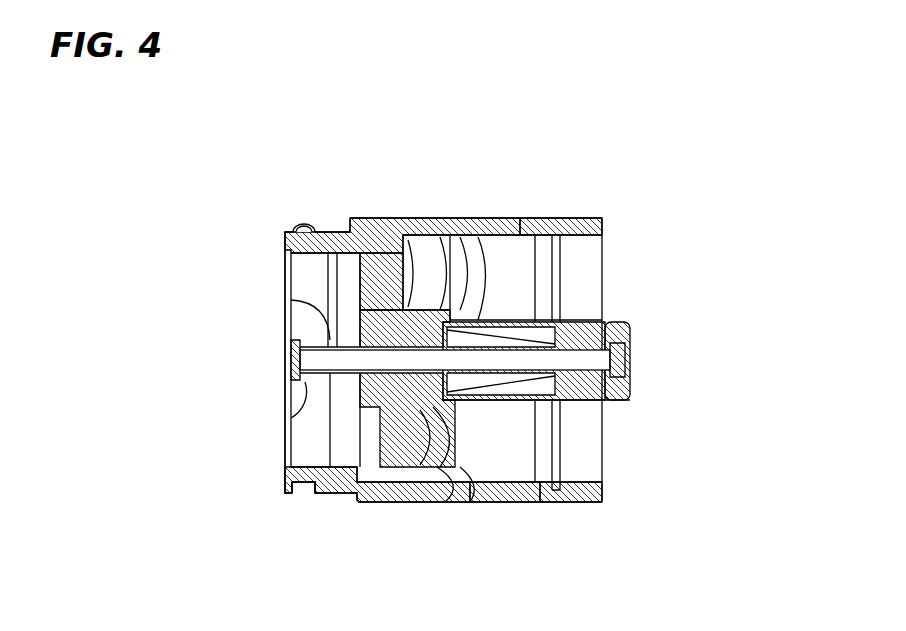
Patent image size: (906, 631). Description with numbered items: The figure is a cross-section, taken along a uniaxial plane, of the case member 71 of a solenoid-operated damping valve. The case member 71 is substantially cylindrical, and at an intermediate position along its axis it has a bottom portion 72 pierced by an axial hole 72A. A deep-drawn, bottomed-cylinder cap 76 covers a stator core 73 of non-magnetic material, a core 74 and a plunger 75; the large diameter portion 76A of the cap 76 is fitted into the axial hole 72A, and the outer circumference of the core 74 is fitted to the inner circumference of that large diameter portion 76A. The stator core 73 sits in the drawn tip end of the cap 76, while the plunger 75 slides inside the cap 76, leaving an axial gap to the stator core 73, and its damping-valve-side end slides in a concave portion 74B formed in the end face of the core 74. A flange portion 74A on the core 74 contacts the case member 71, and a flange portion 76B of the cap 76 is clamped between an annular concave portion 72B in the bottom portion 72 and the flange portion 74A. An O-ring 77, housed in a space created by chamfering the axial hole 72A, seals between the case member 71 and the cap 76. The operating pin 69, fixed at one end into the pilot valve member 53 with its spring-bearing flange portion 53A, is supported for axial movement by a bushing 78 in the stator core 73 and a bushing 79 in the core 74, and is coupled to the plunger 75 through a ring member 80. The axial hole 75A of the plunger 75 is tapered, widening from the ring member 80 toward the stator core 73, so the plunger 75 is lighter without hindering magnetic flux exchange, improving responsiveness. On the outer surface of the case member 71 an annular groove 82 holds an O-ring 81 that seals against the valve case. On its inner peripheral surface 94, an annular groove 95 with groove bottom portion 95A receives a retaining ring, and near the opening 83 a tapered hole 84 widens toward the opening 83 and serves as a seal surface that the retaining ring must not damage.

The case member 71 is at (329, 175).
The O-ring 81 is at (300, 228).
The core 74 is at (395, 222).
The flange portion 76B is at (384, 300).
The concave portion 74B is at (425, 237).
The ring member 80 is at (445, 240).
The plunger 75 is at (488, 240).
The axial hole 75A is at (538, 237).
The annular groove 95 is at (562, 227).
The tapered hole 84 is at (603, 247).
The operating pin 69 is at (605, 307).
The stator core 73 is at (633, 327).
The bushing 78 is at (633, 370).
The cap 76 is at (603, 418).
The opening 83 is at (603, 490).
The bottom portion 95A is at (585, 502).
The inner peripheral surface 94 is at (525, 502).
The O-ring 77 is at (330, 290).
The bushing 79 is at (330, 320).
The pilot valve member 53 is at (300, 387).
The flange portion 53A is at (310, 405).
The annular groove 82 is at (300, 497).
The flange portion 74A is at (333, 495).
The annular concave portion 72B is at (388, 472).
The bottom portion 72 is at (410, 470).
The axial hole 72A is at (420, 470).
The large diameter portion 76A is at (445, 408).